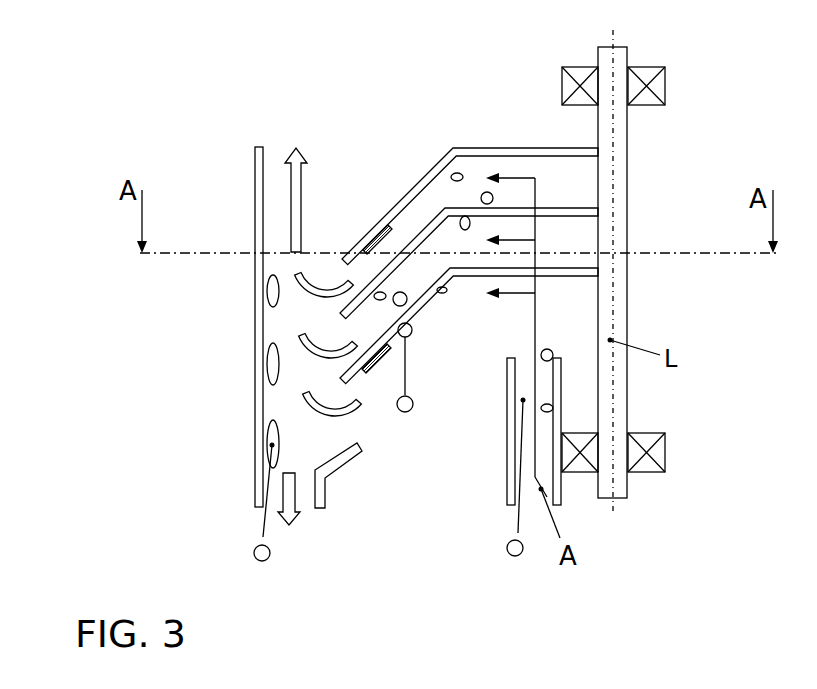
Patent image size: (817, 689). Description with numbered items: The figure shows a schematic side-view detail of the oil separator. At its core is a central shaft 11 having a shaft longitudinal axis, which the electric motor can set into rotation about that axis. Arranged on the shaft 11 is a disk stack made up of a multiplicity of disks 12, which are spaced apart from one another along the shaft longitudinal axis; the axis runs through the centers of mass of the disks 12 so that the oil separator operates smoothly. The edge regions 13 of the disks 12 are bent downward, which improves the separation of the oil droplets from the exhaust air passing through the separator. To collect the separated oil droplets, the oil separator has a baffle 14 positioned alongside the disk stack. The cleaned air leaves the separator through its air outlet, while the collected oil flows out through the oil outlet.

The shaft 11 is at (620, 272).
The disks 12 is at (475, 150).
The edge regions 13 is at (412, 189).
The baffle 14 is at (258, 408).